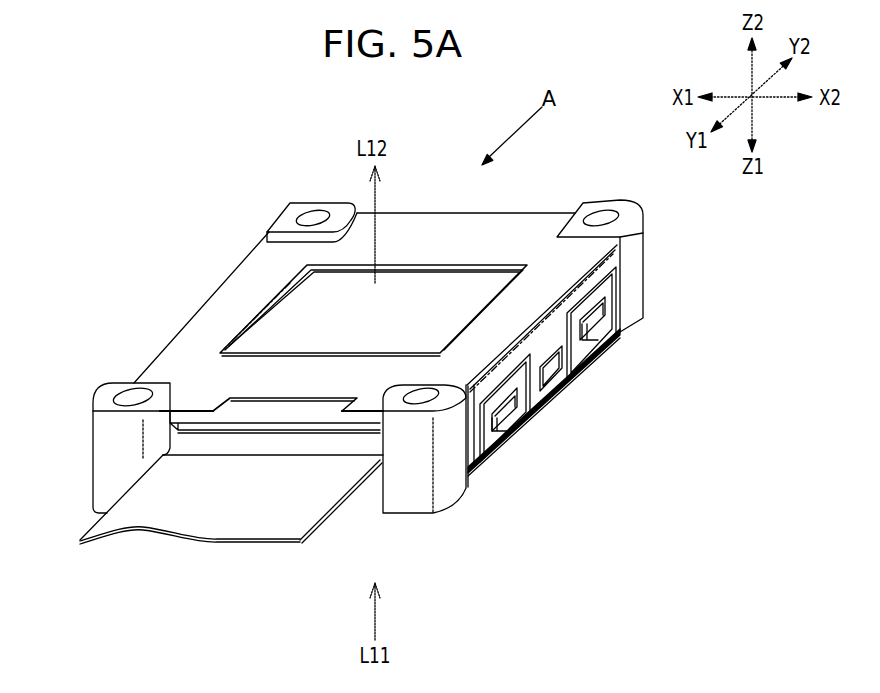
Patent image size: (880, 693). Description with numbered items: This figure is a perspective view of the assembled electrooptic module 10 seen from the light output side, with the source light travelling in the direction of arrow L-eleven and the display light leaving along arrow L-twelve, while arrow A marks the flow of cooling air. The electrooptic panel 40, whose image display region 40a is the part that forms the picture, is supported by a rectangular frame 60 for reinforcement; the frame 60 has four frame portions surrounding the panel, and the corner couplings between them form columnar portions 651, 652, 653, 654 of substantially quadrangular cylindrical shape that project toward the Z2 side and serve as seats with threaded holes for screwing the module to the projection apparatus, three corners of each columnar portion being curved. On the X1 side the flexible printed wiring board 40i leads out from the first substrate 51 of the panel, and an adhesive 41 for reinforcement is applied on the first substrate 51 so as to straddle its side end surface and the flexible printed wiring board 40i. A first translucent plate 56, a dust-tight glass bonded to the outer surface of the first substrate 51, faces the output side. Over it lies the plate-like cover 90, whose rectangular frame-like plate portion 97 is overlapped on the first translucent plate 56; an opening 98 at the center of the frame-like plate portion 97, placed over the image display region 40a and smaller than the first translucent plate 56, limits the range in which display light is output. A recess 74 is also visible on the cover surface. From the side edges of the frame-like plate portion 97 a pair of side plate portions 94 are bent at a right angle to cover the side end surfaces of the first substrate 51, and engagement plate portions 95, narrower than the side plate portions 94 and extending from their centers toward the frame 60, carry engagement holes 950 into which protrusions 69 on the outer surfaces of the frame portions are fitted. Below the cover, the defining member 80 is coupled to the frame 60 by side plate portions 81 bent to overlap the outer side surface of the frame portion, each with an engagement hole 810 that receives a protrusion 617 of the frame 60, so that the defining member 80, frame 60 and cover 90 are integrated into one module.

The electrooptic module 10 is at (598, 138).
The electrooptic panel 40 is at (401, 282).
The image display region 40a is at (290, 283).
The flexible printed wiring board 40i is at (222, 527).
The adhesive 41 is at (320, 442).
The first substrate 51 is at (250, 418).
The first translucent plate 56 is at (443, 283).
The frame 60 is at (420, 530).
The protrusions 69 is at (565, 378).
The recessed panel 74 is at (278, 377).
The defining member 80 is at (614, 335).
The side plate portions 81 is at (611, 283).
The engagement hole 810 is at (584, 341).
The plate-like cover 90 is at (256, 247).
The side plate portions 94 is at (612, 262).
The engagement plate portions 95 is at (558, 386).
The engagement holes 950 is at (544, 393).
The frame-like plate portion 97 is at (490, 247).
The opening 98 is at (347, 352).
The protrusions 617 is at (620, 315).
The columnar portion 651 is at (634, 227).
The columnar portion 652 is at (272, 224).
The columnar portion 653 is at (447, 488).
The columnar portion 654 is at (97, 432).